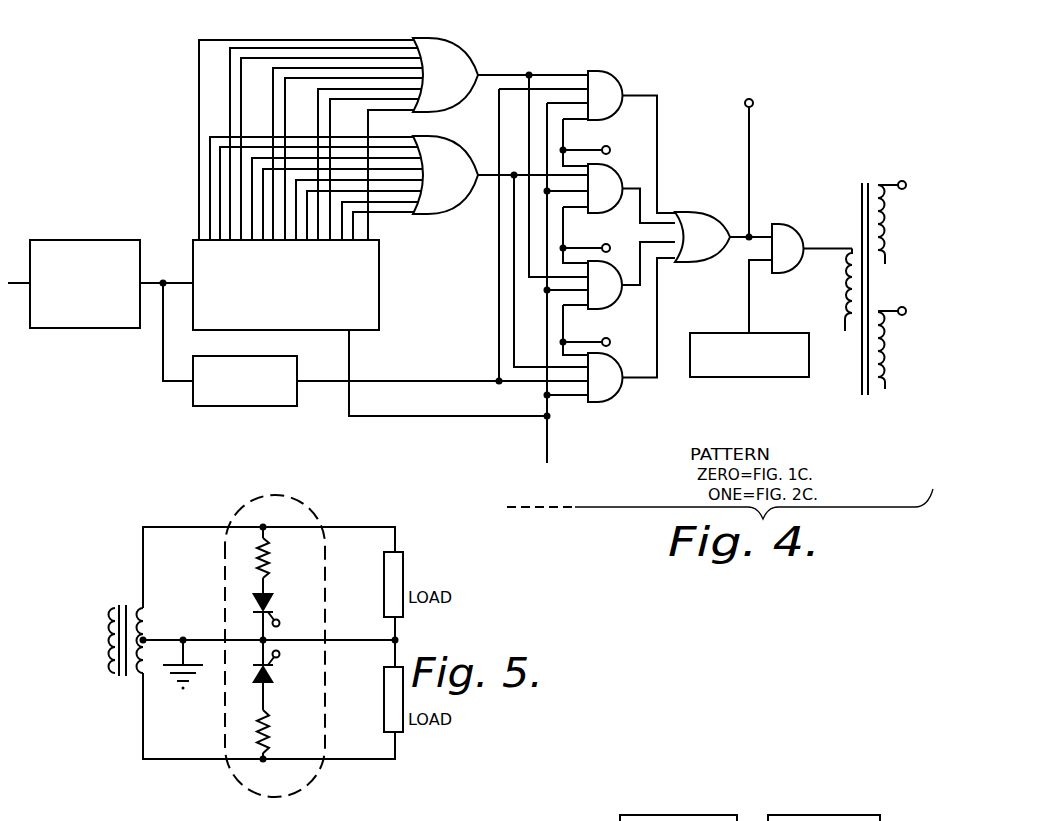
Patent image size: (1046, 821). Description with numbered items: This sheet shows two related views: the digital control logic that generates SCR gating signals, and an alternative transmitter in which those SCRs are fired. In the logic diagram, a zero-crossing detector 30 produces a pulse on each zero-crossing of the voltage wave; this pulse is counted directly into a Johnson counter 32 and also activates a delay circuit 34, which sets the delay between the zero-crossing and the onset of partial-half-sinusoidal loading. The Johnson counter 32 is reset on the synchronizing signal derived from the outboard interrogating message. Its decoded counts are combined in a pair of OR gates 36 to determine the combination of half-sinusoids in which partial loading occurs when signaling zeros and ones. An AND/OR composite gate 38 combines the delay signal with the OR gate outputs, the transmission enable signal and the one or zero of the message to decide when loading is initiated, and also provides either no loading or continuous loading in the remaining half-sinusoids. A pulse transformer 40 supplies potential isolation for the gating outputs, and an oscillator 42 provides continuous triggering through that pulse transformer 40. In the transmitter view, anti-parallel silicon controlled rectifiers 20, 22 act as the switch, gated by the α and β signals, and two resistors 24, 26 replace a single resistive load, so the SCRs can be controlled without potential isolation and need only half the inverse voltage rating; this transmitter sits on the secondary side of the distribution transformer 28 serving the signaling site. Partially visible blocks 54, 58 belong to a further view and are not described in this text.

In FIG. 5, the silicon controlled rectifier 20 is at (276, 680).
In FIG. 5, the silicon controlled rectifier 22 is at (276, 598).
In FIG. 5, the resistor 24 is at (273, 714).
In FIG. 5, the resistor 26 is at (273, 551).
In FIG. 5, the distribution transformer 28 is at (122, 610).
In FIG. 4, the zero-crossing detector 30 is at (86, 240).
In FIG. 4, the Johnson counter 32 is at (190, 262).
In FIG. 4, the delay circuit 34 is at (195, 403).
In FIG. 4, the OR gates 36 is at (445, 72).
In FIG. 4, the AND/OR composite gate 38 is at (674, 75).
In FIG. 4, the pulse transformer 40 is at (863, 184).
In FIG. 4, the oscillator 42 is at (693, 338).
In FIG. 5, the block 54 is at (722, 818).
In FIG. 5, the block 58 is at (778, 818).